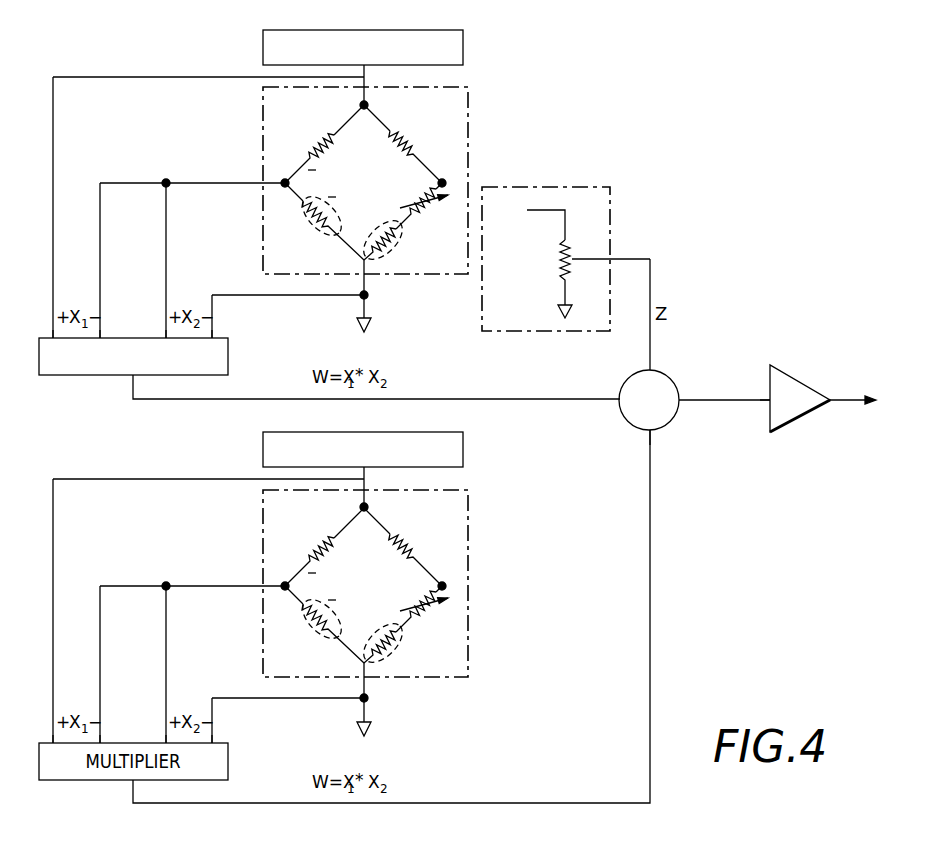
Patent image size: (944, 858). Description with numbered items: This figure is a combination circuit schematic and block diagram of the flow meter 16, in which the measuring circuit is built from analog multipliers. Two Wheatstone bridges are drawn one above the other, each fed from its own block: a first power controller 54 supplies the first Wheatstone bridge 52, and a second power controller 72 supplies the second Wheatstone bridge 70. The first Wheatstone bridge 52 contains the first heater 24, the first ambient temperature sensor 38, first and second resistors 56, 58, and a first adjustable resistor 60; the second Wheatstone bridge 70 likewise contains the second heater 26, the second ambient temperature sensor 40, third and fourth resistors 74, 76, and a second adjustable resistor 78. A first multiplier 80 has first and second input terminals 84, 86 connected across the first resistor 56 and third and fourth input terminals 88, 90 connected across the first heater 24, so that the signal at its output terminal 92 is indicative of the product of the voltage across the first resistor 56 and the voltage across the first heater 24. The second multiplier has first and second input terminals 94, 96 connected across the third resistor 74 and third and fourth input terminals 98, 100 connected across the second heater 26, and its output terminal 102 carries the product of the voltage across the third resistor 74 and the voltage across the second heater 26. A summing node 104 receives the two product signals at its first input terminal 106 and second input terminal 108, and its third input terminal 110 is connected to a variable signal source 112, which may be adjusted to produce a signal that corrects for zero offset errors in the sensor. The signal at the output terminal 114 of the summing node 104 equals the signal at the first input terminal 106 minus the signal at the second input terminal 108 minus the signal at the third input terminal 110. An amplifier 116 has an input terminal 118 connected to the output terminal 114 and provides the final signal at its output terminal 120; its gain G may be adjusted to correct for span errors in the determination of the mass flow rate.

The flow meter 16 is at (682, 130).
The first heater 24 is at (325, 212).
The second heater 26 is at (324, 622).
The first ambient temperature sensor 38 is at (383, 230).
The second ambient temperature sensor 40 is at (394, 636).
The first Wheatstone bridge 52 is at (263, 110).
The first power controller 54 is at (263, 46).
The first resistor 56 is at (339, 131).
The second resistor 58 is at (394, 145).
The first adjustable resistor 60 is at (424, 196).
The second Wheatstone bridge 70 is at (343, 583).
The second power controller 72 is at (263, 449).
The third resistor 74 is at (324, 542).
The fourth resistor 76 is at (402, 547).
The second adjustable resistor 78 is at (429, 605).
The first multiplier 80 is at (228, 357).
The first input terminal 84 is at (53, 337).
The second input terminal 86 is at (100, 337).
The third input terminal 88 is at (165, 337).
The fourth input terminal 90 is at (212, 337).
The output terminal 92 is at (130, 376).
The first input terminal 94 is at (40, 721).
The second input terminal 96 is at (113, 721).
The third input terminal 98 is at (150, 713).
The fourth input terminal 100 is at (235, 724).
The output terminal 102 is at (366, 623).
The summing node 104 is at (666, 421).
The first input terminal 106 is at (628, 414).
The second input terminal 108 is at (645, 432).
The third input terminal 110 is at (655, 368).
The variable signal source 112 is at (566, 182).
The output terminal 114 is at (678, 408).
The amplifier 116 is at (792, 382).
The input terminal 118 is at (768, 398).
The output terminal 120 is at (832, 404).